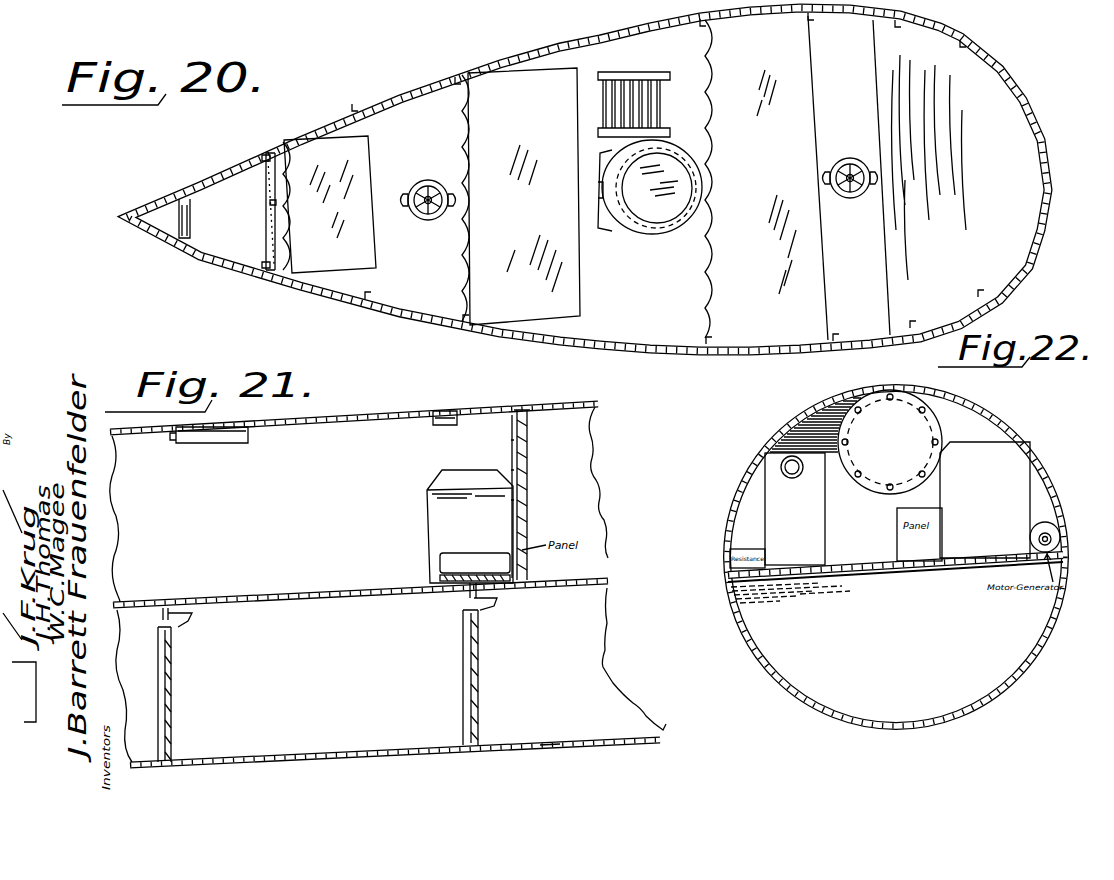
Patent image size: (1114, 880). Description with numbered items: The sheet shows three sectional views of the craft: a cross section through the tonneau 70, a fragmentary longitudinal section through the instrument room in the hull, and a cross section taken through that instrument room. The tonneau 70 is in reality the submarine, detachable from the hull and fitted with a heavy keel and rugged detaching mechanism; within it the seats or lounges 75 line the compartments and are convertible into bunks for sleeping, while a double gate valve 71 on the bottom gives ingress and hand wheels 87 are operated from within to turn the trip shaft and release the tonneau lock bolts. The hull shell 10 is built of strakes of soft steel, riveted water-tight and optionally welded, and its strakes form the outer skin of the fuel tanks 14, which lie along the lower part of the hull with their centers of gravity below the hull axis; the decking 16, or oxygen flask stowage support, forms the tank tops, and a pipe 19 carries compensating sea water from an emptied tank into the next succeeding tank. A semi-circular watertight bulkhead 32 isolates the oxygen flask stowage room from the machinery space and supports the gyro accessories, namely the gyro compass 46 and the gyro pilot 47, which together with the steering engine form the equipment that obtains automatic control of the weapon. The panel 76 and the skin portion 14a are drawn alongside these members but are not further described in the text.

In FIG. 21, the shell 10 is at (352, 418).
In FIG. 22, the shell 10 is at (1000, 421).
In FIG. 21, the fuel tank 14 is at (313, 750).
In FIG. 21, the bottom skin section 14a is at (550, 733).
In FIG. 21, the decking 16 is at (327, 591).
In FIG. 22, the decking 16 is at (853, 562).
In FIG. 21, the pipe 19 is at (156, 683).
In FIG. 21, the bulkhead 32 is at (530, 483).
In FIG. 22, the bulkhead 32 is at (957, 420).
In FIG. 21, the gyro compass 46 is at (507, 522).
In FIG. 22, the gyro compass 46 is at (1017, 470).
In FIG. 22, the gyro pilot 47 is at (817, 533).
In FIG. 20, the tonneau 70 is at (662, 352).
In FIG. 20, the gate valve 71 is at (656, 216).
In FIG. 21, the gate valve 71 is at (225, 445).
In FIG. 20, the seat or lounge 75 is at (375, 145).
In FIG. 20, the panel 76 is at (566, 96).
In FIG. 20, the hand wheel 87 is at (428, 181).